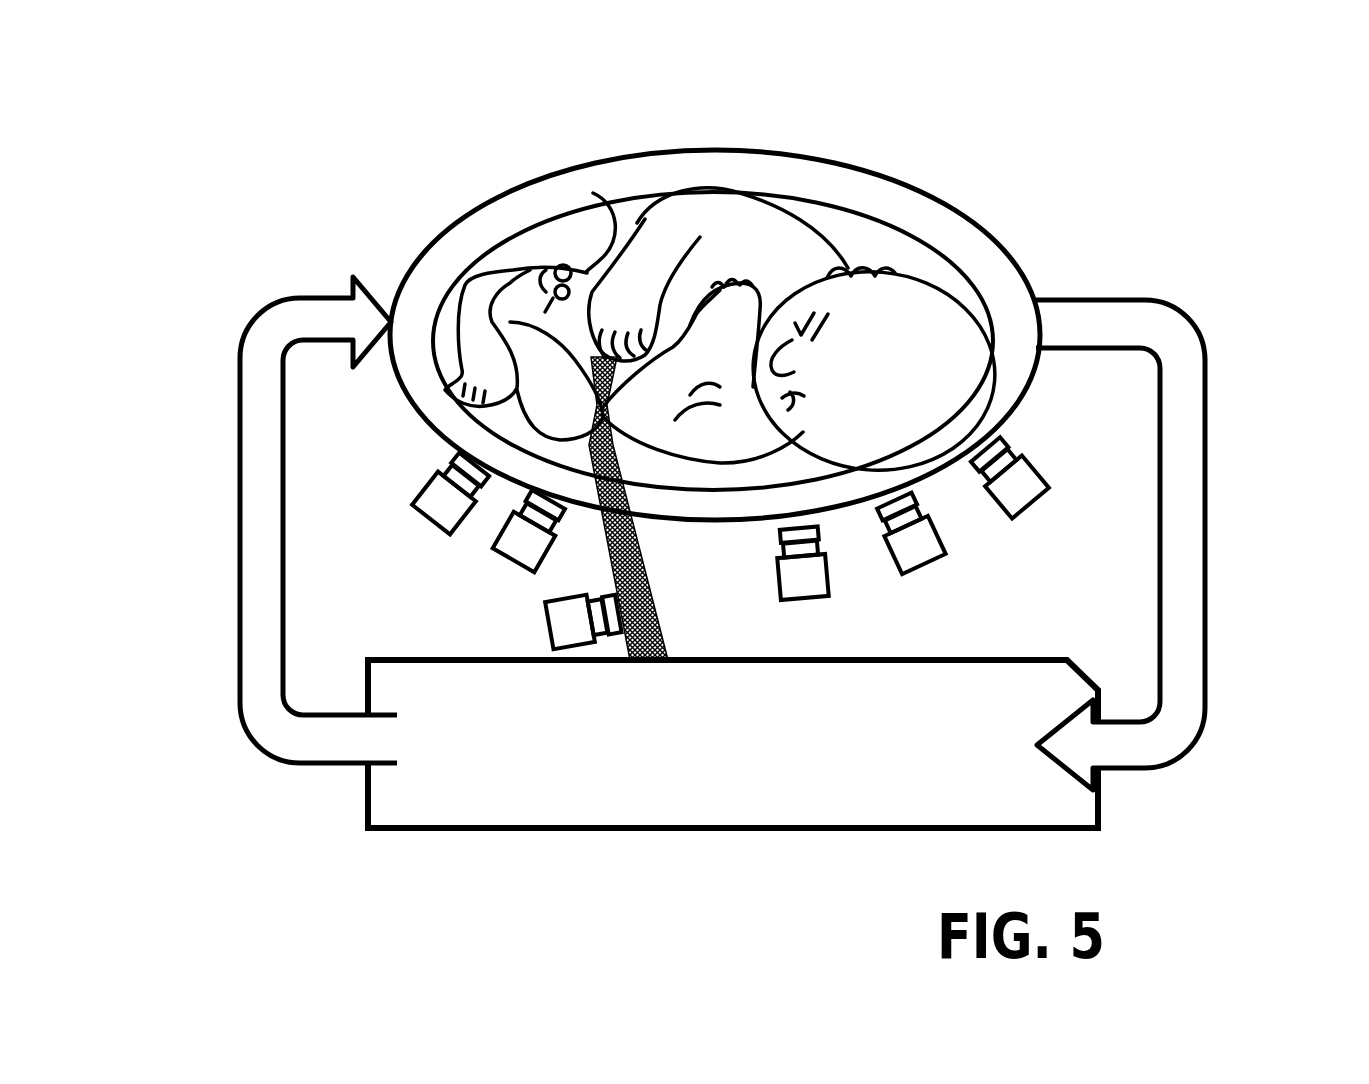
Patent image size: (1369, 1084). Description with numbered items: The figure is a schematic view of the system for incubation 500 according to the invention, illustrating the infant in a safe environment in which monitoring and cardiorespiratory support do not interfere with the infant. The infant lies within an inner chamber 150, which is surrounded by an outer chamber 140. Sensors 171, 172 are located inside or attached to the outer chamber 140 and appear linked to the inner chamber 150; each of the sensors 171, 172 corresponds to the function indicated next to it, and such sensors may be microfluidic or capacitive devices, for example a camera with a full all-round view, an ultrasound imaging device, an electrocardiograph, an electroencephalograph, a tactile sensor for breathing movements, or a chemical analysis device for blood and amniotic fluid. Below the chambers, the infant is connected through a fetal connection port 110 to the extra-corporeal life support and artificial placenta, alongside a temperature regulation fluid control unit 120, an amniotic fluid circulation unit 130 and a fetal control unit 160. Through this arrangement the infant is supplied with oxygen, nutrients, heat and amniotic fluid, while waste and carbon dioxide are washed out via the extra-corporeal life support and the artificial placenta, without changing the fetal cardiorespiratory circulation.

The artificial placenta system 500 is at (195, 117).
The outer chamber 140 is at (948, 188).
The inner chamber 150 is at (983, 227).
The sensor 171 is at (388, 591).
The sensor 172 is at (1090, 620).
The fetal connection port 110 is at (568, 831).
The temperature regulation fluid control unit 120 is at (650, 831).
The amniotic fluid circulation unit 130 is at (733, 831).
The fetal control unit 160 is at (827, 831).